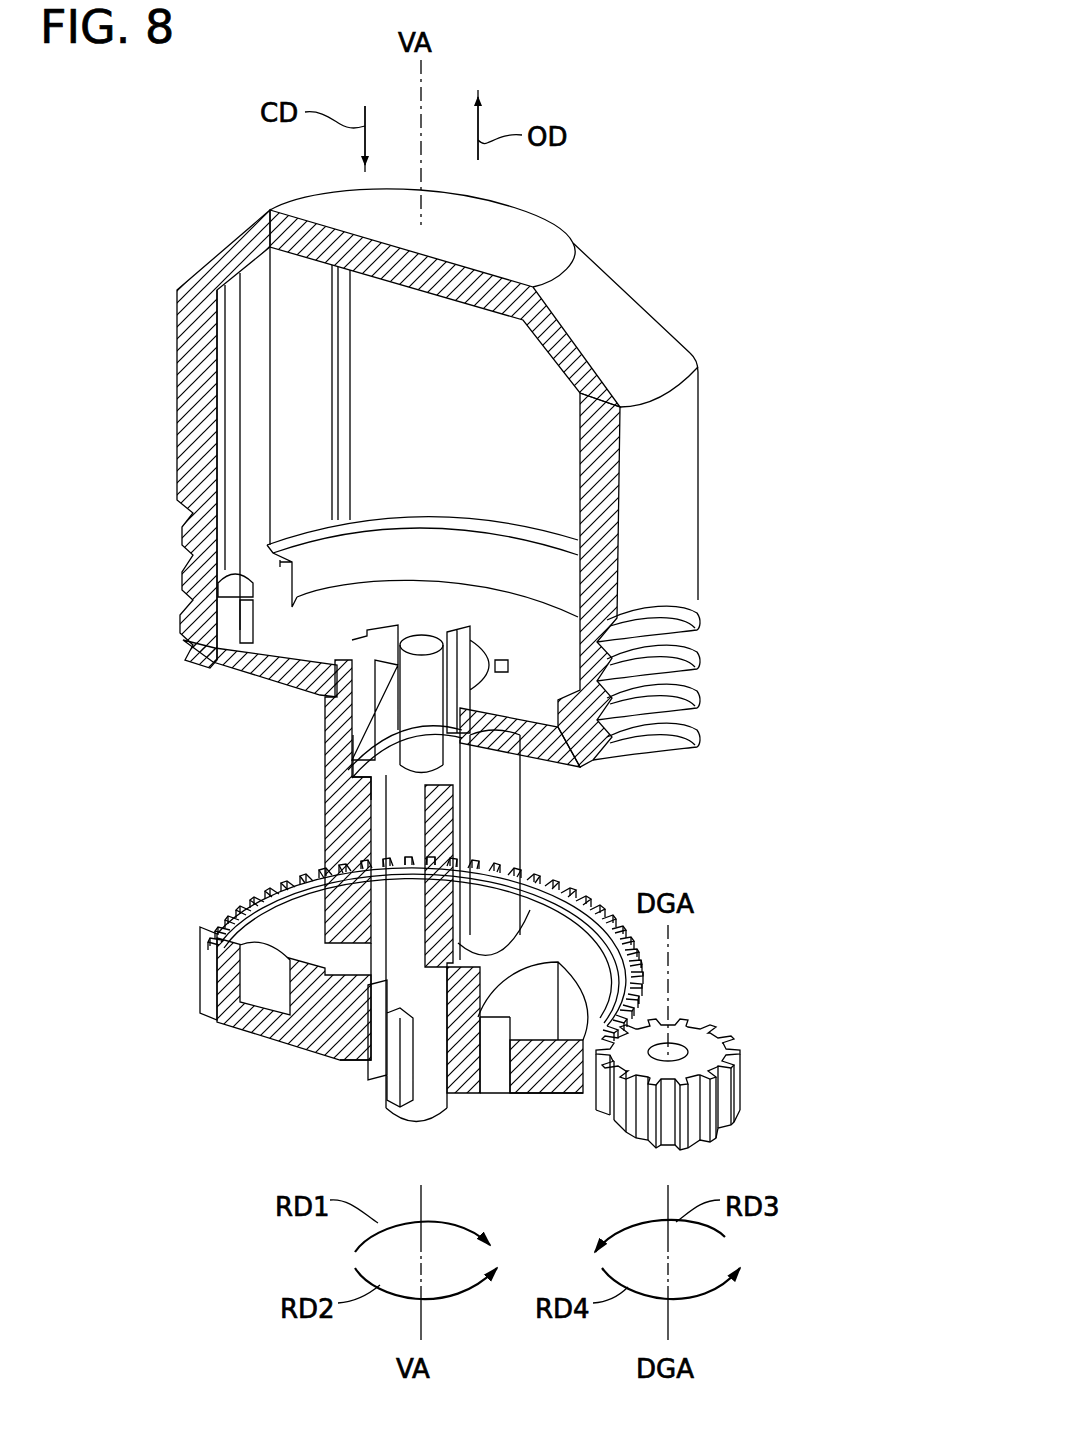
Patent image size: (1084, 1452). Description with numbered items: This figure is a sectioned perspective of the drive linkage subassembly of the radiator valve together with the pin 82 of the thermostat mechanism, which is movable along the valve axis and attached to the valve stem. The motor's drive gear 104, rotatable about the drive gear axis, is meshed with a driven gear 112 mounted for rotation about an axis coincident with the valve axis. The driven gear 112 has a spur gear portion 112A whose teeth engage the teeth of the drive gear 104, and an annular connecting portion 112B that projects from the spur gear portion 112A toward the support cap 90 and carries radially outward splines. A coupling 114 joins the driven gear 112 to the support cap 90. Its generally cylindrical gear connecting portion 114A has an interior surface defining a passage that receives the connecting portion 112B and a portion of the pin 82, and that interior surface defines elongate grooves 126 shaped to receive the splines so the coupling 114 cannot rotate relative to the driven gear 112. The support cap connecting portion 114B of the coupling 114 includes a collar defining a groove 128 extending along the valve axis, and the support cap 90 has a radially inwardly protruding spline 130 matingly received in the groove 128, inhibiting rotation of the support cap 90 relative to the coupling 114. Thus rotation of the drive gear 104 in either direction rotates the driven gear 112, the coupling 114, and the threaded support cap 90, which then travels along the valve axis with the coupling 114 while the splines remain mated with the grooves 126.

The pin 82 is at (400, 1123).
The support cap 90 is at (700, 437).
The drive gear 104 is at (718, 1125).
The driven gear 112 is at (253, 1033).
The spur gear portion 112A is at (613, 903).
The annular connecting portion 112B is at (383, 857).
The coupling 114 is at (520, 833).
The gear connecting portion 114A is at (500, 797).
The support cap connecting portion 114B is at (518, 572).
The grooves 126 is at (380, 643).
The groove 128 is at (248, 575).
The spline 130 is at (245, 405).